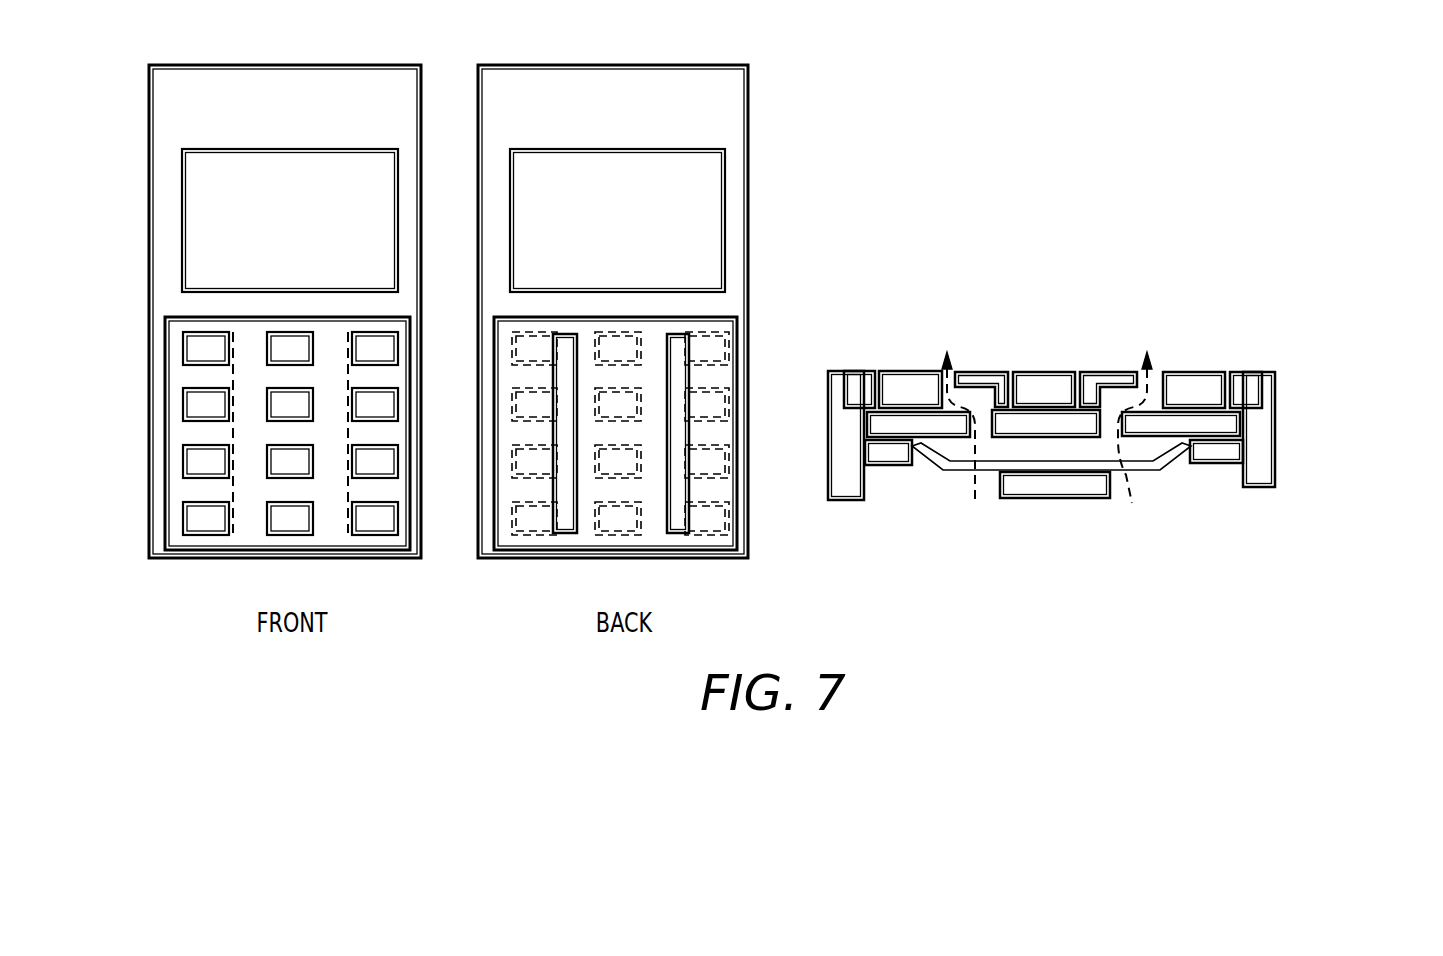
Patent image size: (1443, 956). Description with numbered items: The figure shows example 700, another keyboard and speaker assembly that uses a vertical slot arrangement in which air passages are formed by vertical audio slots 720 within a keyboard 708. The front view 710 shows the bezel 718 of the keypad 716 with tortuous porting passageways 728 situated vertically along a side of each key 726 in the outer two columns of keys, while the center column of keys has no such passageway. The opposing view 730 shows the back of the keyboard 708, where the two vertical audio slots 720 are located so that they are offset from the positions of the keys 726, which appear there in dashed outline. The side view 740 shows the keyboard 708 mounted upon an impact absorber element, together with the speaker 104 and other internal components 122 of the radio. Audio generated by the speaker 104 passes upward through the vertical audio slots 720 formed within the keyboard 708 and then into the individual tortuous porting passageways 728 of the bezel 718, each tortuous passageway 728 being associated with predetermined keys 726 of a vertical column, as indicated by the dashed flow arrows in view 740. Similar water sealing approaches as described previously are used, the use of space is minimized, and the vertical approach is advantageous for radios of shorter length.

The keyboard and speaker assembly 700 is at (1364, 597).
The view 710 is at (377, 46).
The view 730 is at (703, 46).
The view 740 is at (1243, 303).
The keypad 716 is at (176, 360).
The bezel 718 is at (165, 420).
The key 726 is at (385, 525).
The tortuous porting passageway 728 is at (233, 523).
The keyboard 708 is at (517, 540).
The vertical audio slot 720 is at (565, 533).
The internal component 122 is at (882, 452).
The speaker 104 is at (1057, 498).